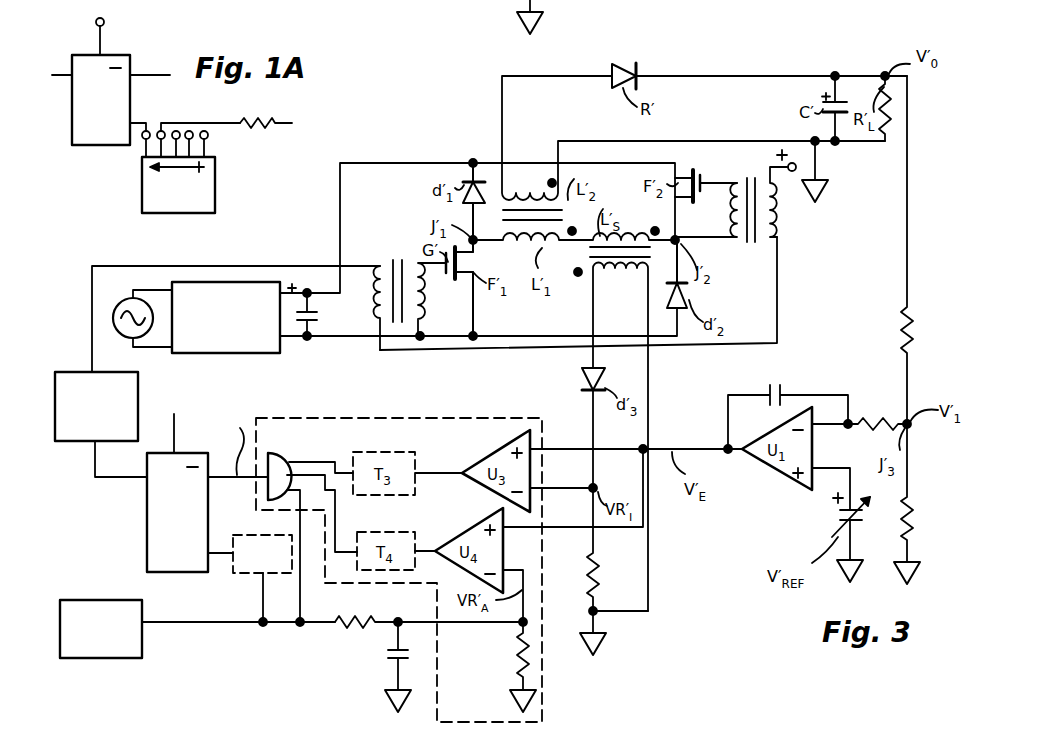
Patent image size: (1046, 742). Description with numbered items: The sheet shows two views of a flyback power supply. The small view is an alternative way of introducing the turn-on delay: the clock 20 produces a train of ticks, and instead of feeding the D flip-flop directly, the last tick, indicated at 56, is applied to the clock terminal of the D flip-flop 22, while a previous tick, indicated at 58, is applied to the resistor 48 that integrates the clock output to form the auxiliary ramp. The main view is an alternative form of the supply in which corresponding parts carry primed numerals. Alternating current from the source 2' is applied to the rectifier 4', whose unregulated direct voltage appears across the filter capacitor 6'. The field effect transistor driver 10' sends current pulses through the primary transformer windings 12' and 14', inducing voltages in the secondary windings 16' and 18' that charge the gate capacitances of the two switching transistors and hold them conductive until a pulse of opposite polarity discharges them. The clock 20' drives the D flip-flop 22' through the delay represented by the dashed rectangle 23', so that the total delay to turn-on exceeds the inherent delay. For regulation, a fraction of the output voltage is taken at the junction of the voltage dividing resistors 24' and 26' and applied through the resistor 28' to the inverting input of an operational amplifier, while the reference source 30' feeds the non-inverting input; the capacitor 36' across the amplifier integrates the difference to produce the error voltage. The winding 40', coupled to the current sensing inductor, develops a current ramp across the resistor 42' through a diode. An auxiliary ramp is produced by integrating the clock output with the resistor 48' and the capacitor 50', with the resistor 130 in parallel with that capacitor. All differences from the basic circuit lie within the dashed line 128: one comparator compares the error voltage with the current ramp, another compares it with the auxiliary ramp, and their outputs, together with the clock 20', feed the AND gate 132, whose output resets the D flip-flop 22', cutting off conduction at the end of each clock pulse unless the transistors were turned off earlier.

In FIG. 1A, the D flip-flop 22 is at (129, 80).
In FIG. 1A, the previous clock tick 58 is at (160, 131).
In FIG. 1A, the last clock tick 56 is at (142, 142).
In FIG. 1A, the clock 20 is at (158, 186).
In FIG. 1A, the resistor 48 is at (265, 141).
In FIG. 3, the source 2' is at (134, 315).
In FIG. 3, the rectifier 4' is at (239, 330).
In FIG. 3, the filter capacitor 6' is at (316, 312).
In FIG. 3, the field effect transistor driver 10' is at (213, 371).
In FIG. 3, the primary transformer winding 12' is at (375, 292).
In FIG. 3, the secondary winding 16' is at (442, 299).
In FIG. 3, the clock 20' is at (197, 614).
In FIG. 3, the D flip-flop 22' is at (183, 477).
In FIG. 3, the delay 23' is at (245, 580).
In FIG. 3, the voltage dividing resistor 24' is at (925, 250).
In FIG. 3, the voltage dividing resistor 26' is at (924, 504).
In FIG. 3, the resistor 28' is at (861, 411).
In FIG. 3, the reference voltage source 30' is at (829, 525).
In FIG. 3, the capacitor 36' is at (788, 405).
In FIG. 3, the winding 40' is at (611, 437).
In FIG. 3, the resistor 42' is at (614, 522).
In FIG. 3, the resistor 48' is at (417, 611).
In FIG. 3, the capacitor 50' is at (373, 667).
In FIG. 3, the dashed line 128 is at (299, 412).
In FIG. 3, the resistor 130 is at (515, 660).
In FIG. 3, the AND gate 132 is at (263, 458).
In FIG. 3, the primary transformer winding 14' is at (794, 209).
In FIG. 3, the secondary winding 18' is at (719, 233).